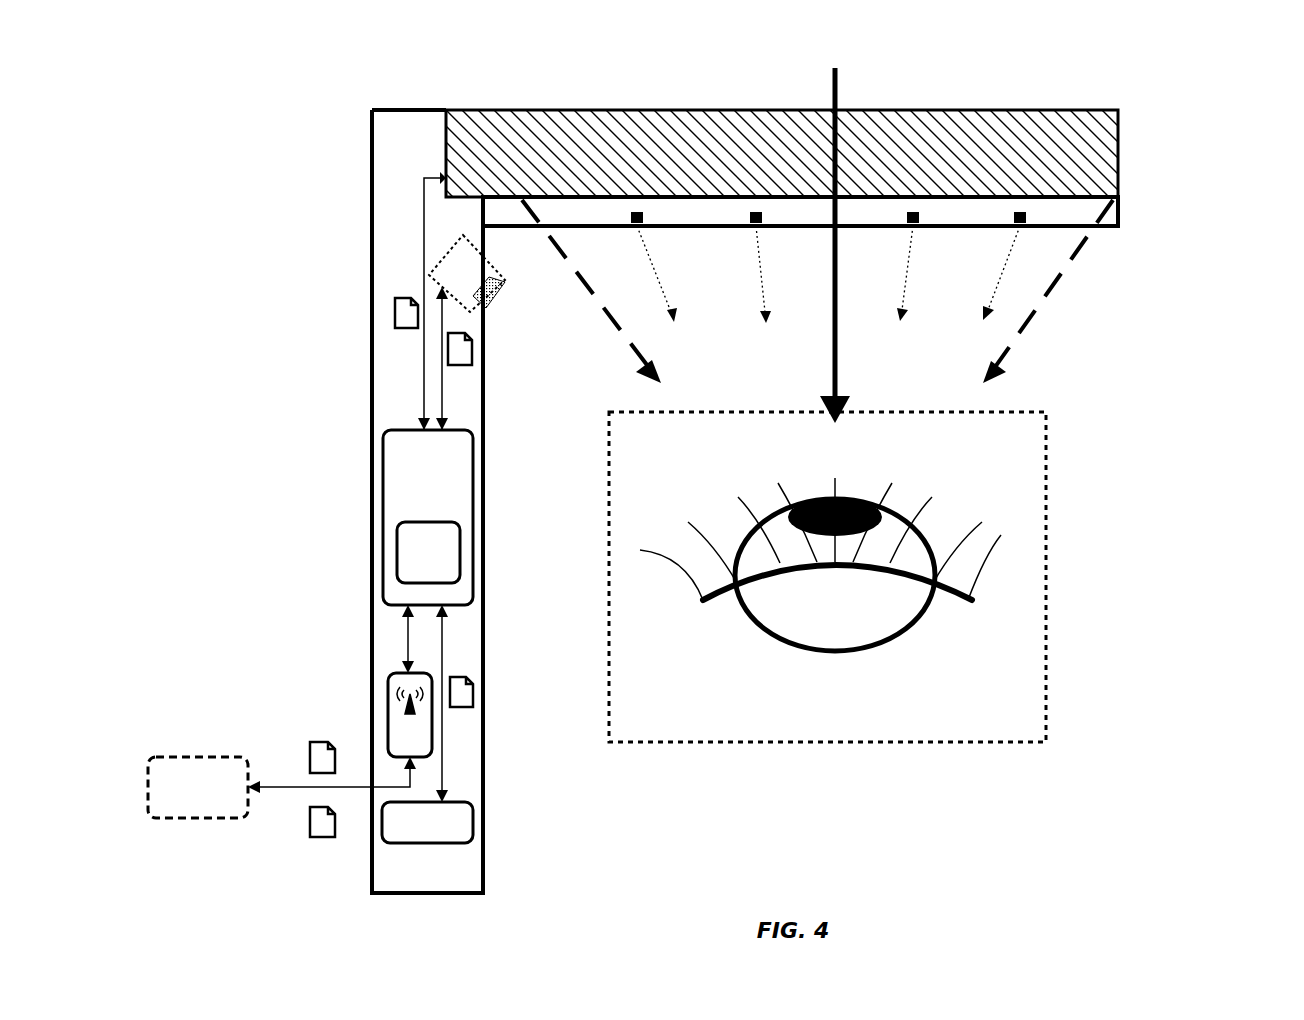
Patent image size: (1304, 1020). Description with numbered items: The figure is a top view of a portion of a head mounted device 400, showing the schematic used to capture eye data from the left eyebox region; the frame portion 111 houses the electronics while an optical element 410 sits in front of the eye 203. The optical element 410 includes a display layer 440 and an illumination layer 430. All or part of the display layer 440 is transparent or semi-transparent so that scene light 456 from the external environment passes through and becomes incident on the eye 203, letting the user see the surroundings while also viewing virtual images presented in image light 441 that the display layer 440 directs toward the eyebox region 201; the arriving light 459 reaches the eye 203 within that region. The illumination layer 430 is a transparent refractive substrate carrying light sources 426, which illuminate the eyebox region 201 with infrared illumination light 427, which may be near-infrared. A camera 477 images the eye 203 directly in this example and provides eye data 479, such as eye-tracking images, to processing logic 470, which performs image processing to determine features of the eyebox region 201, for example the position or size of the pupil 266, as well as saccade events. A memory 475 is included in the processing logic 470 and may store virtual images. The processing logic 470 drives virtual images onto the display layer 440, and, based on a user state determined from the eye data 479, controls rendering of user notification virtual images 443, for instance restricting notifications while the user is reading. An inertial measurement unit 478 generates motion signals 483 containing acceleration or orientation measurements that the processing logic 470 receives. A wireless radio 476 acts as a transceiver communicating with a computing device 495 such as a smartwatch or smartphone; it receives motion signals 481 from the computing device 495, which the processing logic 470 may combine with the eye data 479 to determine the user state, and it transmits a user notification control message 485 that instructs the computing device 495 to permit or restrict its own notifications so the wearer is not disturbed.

The head mounted device 400 is at (1205, 25).
The frame / head mounted display housing 111 is at (427, 501).
The display layer 440 is at (1038, 110).
The illumination layer 430 is at (1118, 226).
The optical element 410 is at (1230, 105).
The scene light 456 is at (834, 230).
The image light 441 is at (972, 388).
The light sources 426 is at (645, 226).
The infrared illumination light 427 is at (828, 289).
The eyebox region 201 is at (1046, 706).
The display light to eye 459 is at (835, 442).
The eye 203 is at (924, 658).
The pupil 266 is at (868, 485).
The processing logic 470 is at (428, 517).
The memory 475 is at (428, 552).
The wireless radio 476 is at (410, 715).
The inertial measurement unit 478 is at (427, 822).
The computing device 495 is at (198, 787).
The camera 477 is at (467, 273).
The user notification virtual images 443 is at (395, 298).
The eye data 479 is at (472, 355).
The motion signals 483 is at (473, 677).
The motion signals 481 is at (310, 742).
The user notification control message 485 is at (310, 837).